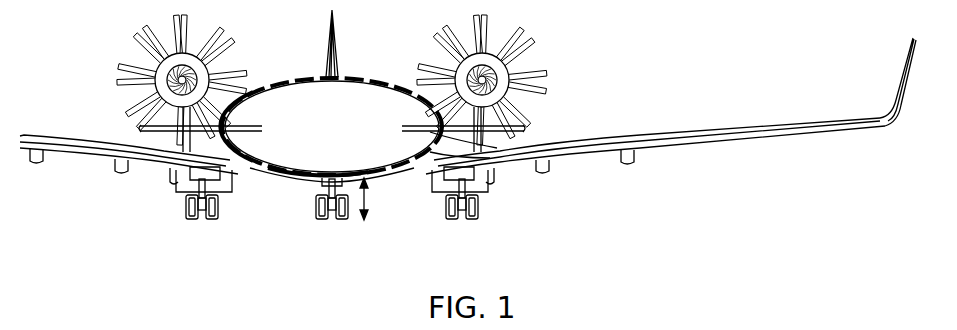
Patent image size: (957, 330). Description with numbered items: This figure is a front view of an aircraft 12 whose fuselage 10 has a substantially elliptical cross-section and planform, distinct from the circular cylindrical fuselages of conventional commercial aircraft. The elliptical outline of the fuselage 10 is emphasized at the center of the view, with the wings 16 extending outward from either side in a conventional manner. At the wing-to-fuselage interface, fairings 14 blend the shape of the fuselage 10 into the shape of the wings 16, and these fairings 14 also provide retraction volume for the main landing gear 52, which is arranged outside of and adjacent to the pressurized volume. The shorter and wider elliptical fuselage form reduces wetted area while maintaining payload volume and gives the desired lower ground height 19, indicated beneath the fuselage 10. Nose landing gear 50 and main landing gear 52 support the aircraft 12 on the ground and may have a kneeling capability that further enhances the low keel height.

The fuselage 10 is at (348, 78).
The aircraft 12 is at (570, 88).
The fairings 14 is at (450, 151).
The wings 16 is at (568, 142).
The ground height 19 is at (375, 183).
The nose landing gear 50 is at (320, 185).
The main landing gear 52 is at (188, 190).